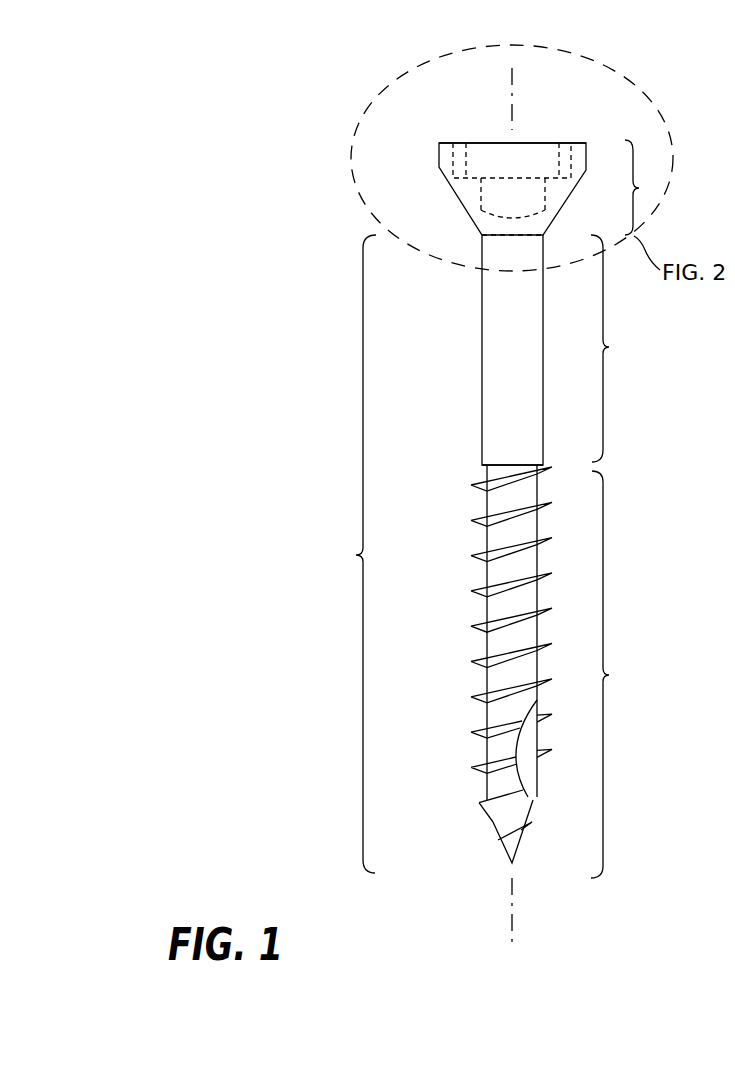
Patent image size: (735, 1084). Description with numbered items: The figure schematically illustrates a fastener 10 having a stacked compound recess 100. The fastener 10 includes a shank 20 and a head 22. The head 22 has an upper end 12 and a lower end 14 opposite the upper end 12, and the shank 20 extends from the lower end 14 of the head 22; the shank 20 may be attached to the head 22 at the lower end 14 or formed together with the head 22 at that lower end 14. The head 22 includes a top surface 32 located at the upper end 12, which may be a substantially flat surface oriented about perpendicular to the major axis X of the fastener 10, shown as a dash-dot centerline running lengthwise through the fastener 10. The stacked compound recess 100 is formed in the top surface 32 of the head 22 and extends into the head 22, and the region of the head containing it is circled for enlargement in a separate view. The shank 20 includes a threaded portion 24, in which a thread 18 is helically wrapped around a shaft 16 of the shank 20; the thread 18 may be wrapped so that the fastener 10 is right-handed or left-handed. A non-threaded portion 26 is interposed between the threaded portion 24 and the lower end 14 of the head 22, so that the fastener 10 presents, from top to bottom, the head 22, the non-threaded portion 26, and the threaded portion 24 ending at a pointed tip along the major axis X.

The fastener 10 is at (248, 126).
The upper end 12 is at (451, 143).
The lower end 14 is at (497, 238).
The shaft 16 is at (498, 672).
The thread 18 is at (474, 545).
The shank 20 is at (358, 555).
The head 22 is at (639, 188).
The threaded portion 24 is at (608, 675).
The non-threaded portion 26 is at (608, 347).
The top surface 32 is at (585, 142).
The stacked compound recess 100 is at (530, 123).
The major axis X is at (510, 890).